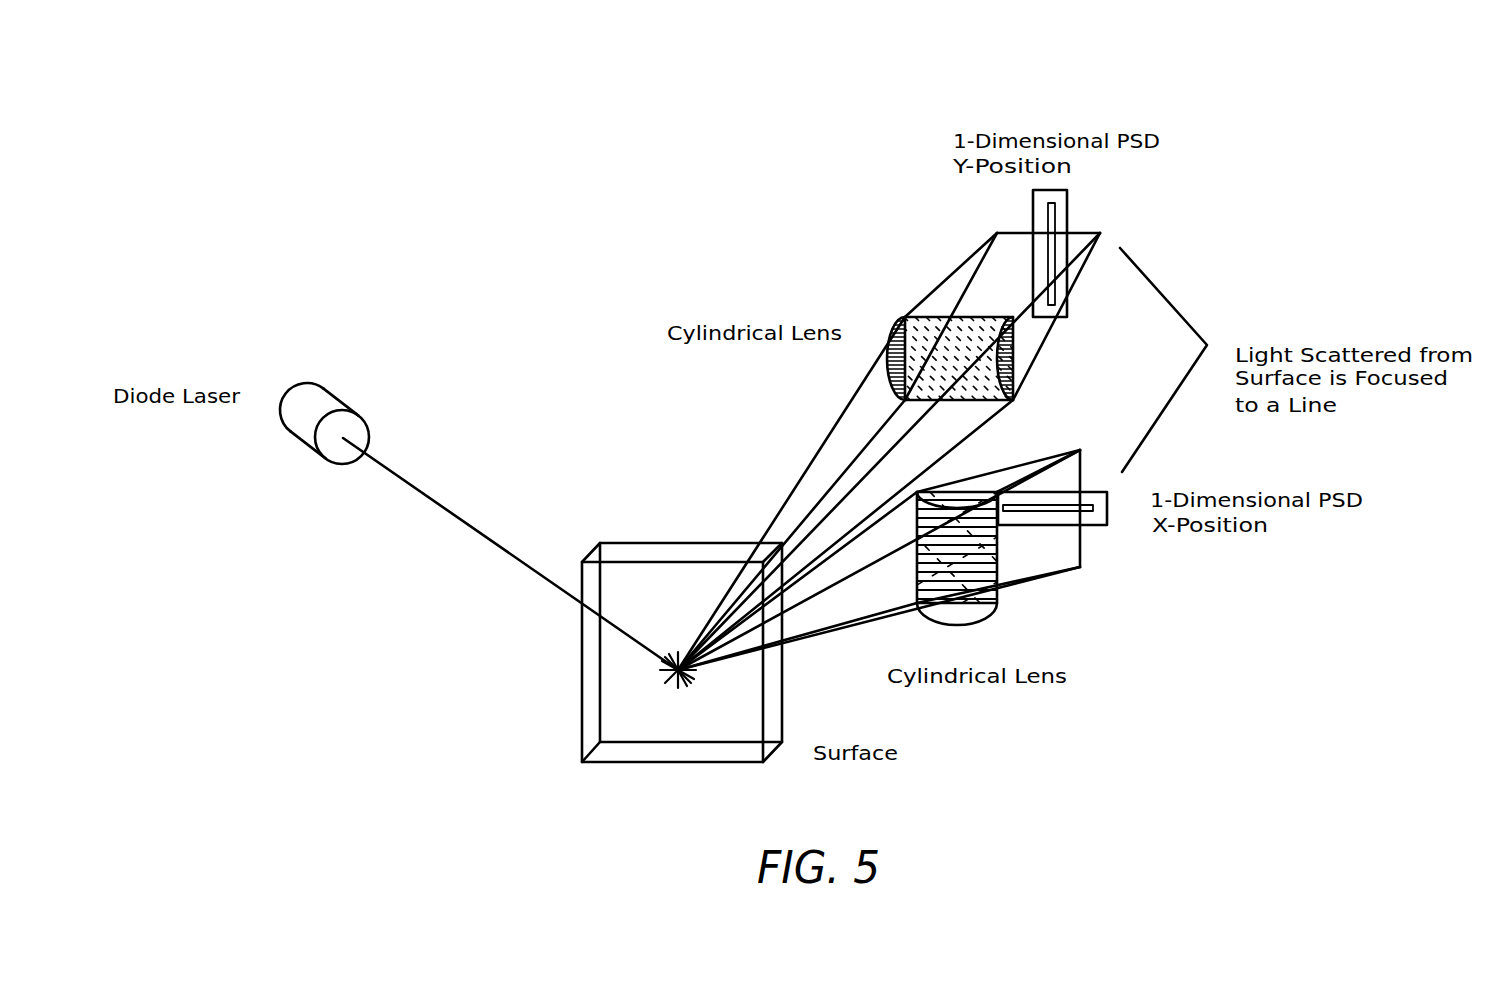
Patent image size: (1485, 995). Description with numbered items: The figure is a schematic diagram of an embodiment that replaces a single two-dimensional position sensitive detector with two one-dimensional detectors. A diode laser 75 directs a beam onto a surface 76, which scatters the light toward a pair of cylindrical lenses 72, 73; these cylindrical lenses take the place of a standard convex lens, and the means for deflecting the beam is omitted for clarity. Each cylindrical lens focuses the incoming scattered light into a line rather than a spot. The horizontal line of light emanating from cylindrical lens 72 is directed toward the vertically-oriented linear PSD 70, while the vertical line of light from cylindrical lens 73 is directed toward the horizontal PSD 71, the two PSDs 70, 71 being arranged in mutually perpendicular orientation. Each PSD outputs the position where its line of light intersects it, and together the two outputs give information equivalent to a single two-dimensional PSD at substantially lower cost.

The one-dimensional PSD 70 is at (1063, 220).
The one-dimensional PSD 71 is at (1090, 522).
The cylindrical lens 72 is at (907, 313).
The cylindrical lens 73 is at (997, 605).
The diode laser 75 is at (327, 410).
The surface 76 is at (607, 675).